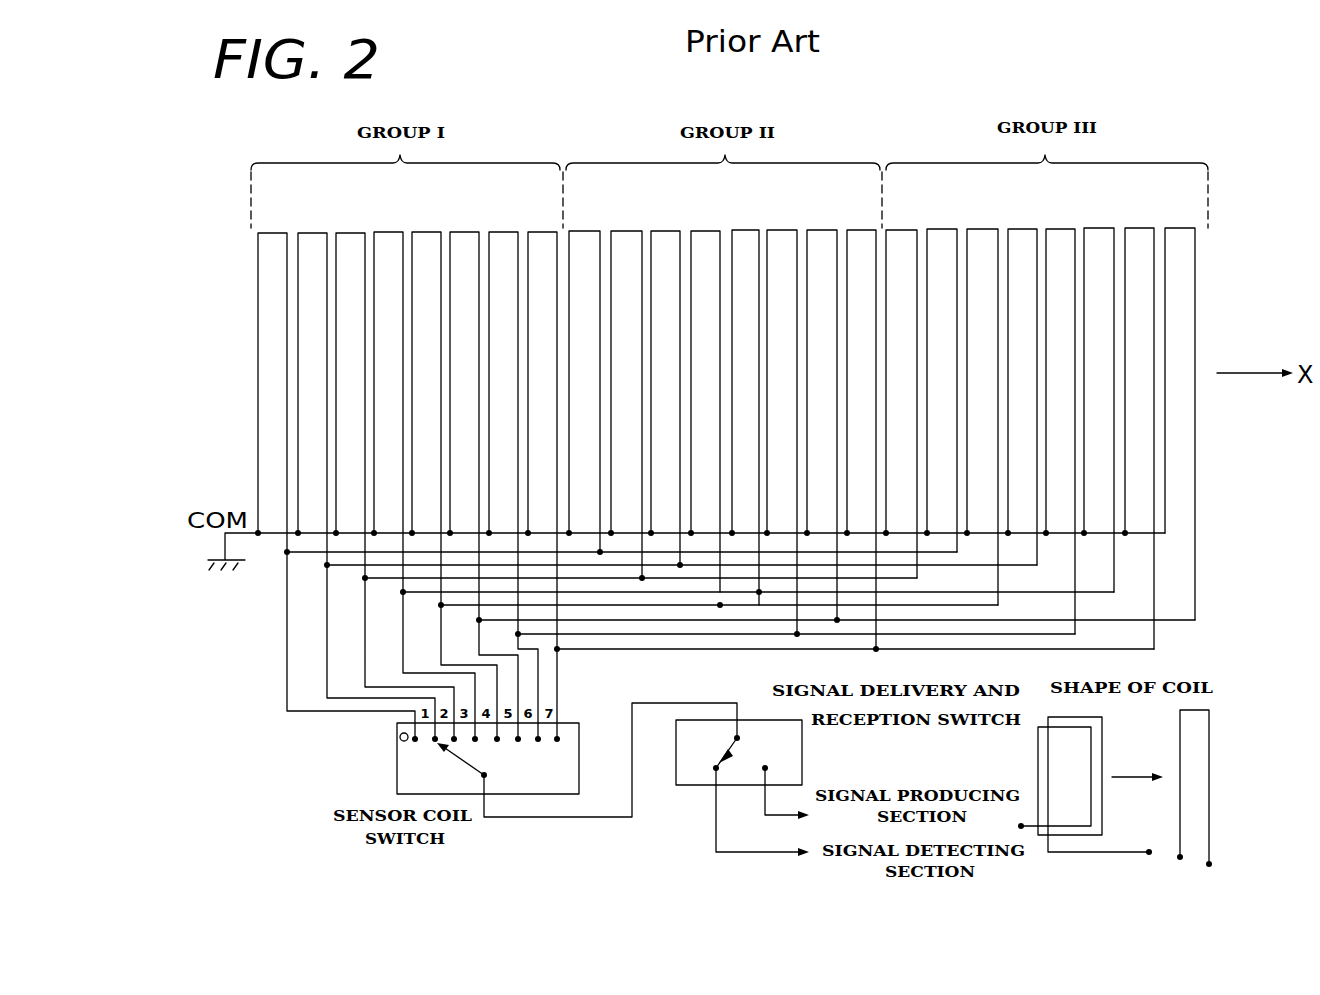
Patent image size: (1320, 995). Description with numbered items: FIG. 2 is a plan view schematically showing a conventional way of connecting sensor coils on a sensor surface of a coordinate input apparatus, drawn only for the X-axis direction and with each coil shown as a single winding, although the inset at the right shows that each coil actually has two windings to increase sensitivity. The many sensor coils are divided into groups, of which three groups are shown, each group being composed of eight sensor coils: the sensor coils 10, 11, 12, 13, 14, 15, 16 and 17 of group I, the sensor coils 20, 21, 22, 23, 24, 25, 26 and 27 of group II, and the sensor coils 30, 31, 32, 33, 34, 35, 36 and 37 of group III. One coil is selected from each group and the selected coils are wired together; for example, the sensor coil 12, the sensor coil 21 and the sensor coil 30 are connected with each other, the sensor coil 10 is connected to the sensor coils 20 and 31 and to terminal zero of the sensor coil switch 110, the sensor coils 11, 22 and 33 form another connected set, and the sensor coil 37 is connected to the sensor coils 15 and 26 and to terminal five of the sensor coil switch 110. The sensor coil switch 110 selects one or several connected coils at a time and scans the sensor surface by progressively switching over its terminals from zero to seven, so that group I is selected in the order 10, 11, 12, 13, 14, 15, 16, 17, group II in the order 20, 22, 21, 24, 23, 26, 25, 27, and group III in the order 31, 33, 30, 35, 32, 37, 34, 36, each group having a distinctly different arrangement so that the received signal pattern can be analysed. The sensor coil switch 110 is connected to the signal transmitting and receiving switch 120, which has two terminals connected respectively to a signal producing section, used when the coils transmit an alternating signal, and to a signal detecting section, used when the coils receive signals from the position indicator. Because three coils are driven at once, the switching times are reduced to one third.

The sensor coil 10 is at (273, 233).
The sensor coil 11 is at (313, 233).
The sensor coil 12 is at (351, 233).
The sensor coil 13 is at (389, 232).
The sensor coil 14 is at (427, 232).
The sensor coil 15 is at (465, 232).
The sensor coil 16 is at (504, 232).
The sensor coil 17 is at (543, 232).
The sensor coil 20 is at (585, 231).
The sensor coil 21 is at (627, 231).
The sensor coil 22 is at (666, 231).
The sensor coil 23 is at (706, 231).
The sensor coil 24 is at (746, 230).
The sensor coil 25 is at (783, 230).
The sensor coil 26 is at (823, 230).
The sensor coil 27 is at (862, 230).
The sensor coil 30 is at (903, 230).
The sensor coil 31 is at (943, 229).
The sensor coil 32 is at (983, 229).
The sensor coil 33 is at (1023, 229).
The sensor coil 34 is at (1061, 229).
The sensor coil 35 is at (1101, 228).
The sensor coil 36 is at (1141, 228).
The sensor coil 37 is at (1182, 228).
The sensor coil switch 110 is at (397, 763).
The signal transmitting and receiving switch 120 is at (802, 748).